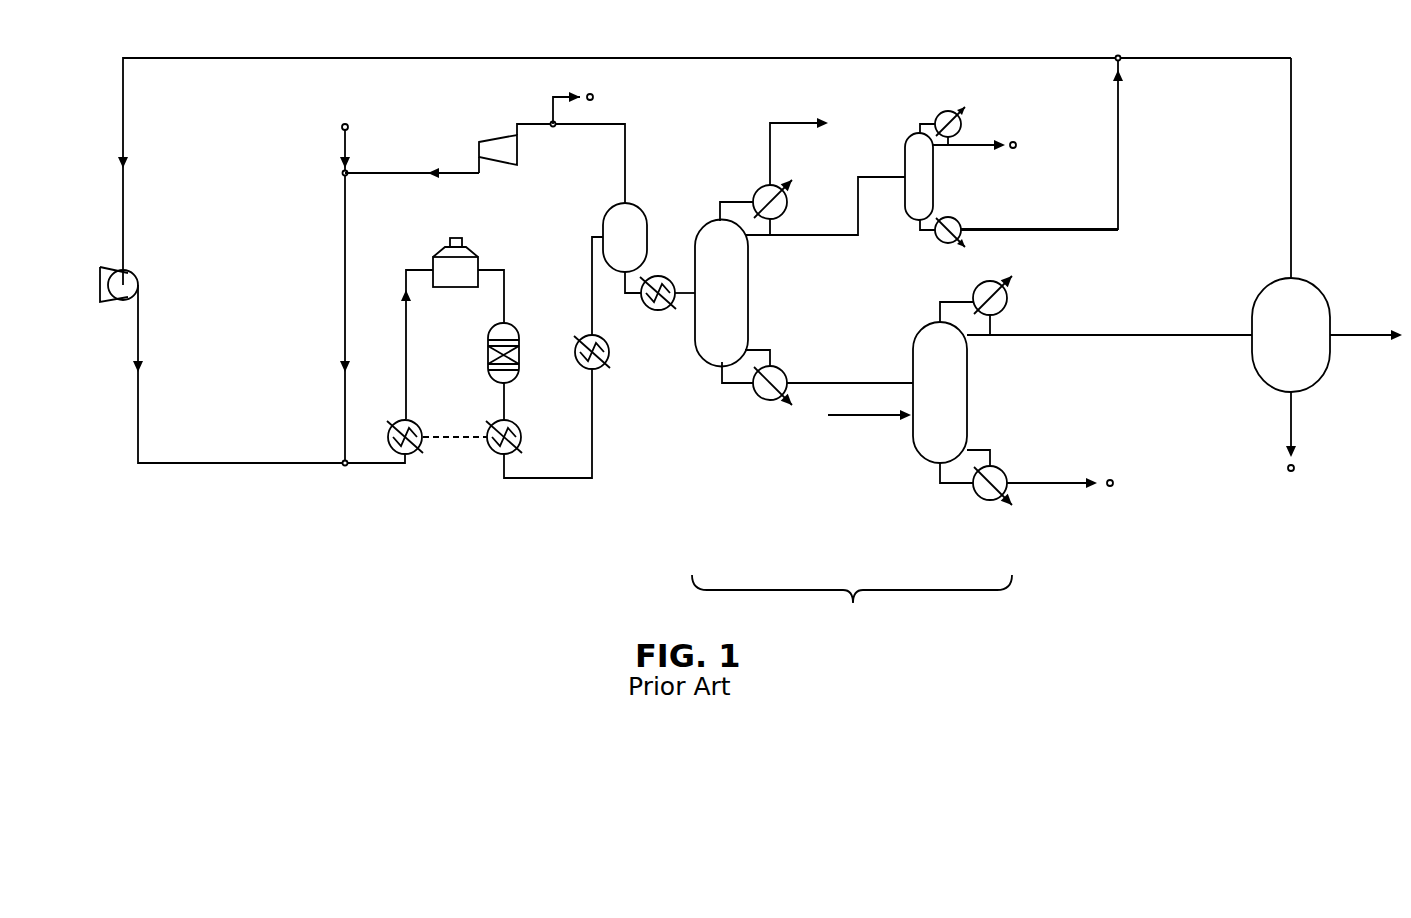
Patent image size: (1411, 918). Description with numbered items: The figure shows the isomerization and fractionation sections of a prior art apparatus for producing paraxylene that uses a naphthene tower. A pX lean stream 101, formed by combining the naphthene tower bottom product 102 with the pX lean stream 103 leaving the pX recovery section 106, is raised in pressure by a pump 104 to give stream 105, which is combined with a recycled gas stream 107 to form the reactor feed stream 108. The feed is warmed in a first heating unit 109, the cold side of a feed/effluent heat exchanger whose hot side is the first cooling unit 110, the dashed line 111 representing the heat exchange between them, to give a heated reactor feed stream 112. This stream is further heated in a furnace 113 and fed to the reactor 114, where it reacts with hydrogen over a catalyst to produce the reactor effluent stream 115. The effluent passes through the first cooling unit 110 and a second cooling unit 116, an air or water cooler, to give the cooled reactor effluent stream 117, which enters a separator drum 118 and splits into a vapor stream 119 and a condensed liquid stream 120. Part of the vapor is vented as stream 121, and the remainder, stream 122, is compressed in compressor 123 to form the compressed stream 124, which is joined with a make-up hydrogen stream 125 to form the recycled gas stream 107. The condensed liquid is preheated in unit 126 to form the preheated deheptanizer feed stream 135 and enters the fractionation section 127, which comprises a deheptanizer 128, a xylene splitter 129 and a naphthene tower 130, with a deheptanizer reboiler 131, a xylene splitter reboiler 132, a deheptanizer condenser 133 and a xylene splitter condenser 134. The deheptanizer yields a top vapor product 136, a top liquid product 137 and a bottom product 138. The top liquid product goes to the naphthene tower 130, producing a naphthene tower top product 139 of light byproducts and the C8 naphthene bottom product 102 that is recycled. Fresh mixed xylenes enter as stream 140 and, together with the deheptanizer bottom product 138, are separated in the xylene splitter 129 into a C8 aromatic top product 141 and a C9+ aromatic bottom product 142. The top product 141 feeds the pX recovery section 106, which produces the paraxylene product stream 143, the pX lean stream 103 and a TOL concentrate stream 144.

The pX lean stream 101 is at (515, 58).
The naphthene tower bottom product 102 is at (1013, 229).
The pX lean stream 103 is at (1291, 140).
The pump 104 is at (140, 275).
The stream 105 is at (245, 464).
The pX recovery section 106 is at (1305, 281).
The recycled gas stream 107 is at (345, 283).
The reactor feed stream 108 is at (365, 464).
The first heating unit 109 is at (415, 456).
The first cooling unit 110 is at (518, 428).
The dashed line 111 is at (455, 436).
The heated reactor feed stream 112 is at (405, 310).
The furnace 113 is at (462, 247).
The reactor 114 is at (518, 340).
The reactor effluent stream 115 is at (505, 402).
The second cooling unit 116 is at (607, 358).
The cooled reactor effluent stream 117 is at (591, 297).
The separator drum 118 is at (647, 228).
The vapor stream 119 is at (615, 124).
The condensed liquid stream 120 is at (627, 287).
The vent stream 121 is at (565, 97).
The stream 122 is at (553, 127).
The compressor 123 is at (492, 140).
The compressed stream 124 is at (412, 172).
The make-up hydrogen stream 125 is at (342, 128).
The preheating unit 126 is at (657, 312).
The fractionation section 127 is at (852, 606).
The deheptanizer 128 is at (750, 310).
The xylene splitter 129 is at (967, 408).
The naphthene tower 130 is at (935, 186).
The deheptanizer reboiler 131 is at (768, 401).
The xylene splitter reboiler 132 is at (990, 503).
The deheptanizer condenser 133 is at (758, 190).
The xylene splitter condenser 134 is at (1005, 290).
The preheated deheptanizer feed stream 135 is at (684, 289).
The deheptanizer top vapor product 136 is at (800, 125).
The deheptanizer top liquid product 137 is at (873, 177).
The deheptanizer bottom product 138 is at (820, 383).
The naphthene tower top product 139 is at (982, 143).
The fresh feed stream 140 is at (860, 416).
The xylene splitter top product 141 is at (1040, 335).
The xylene splitter bottom product 142 is at (1060, 484).
The paraxylene product stream 143 is at (1289, 430).
The TOL concentrate stream 144 is at (1375, 336).